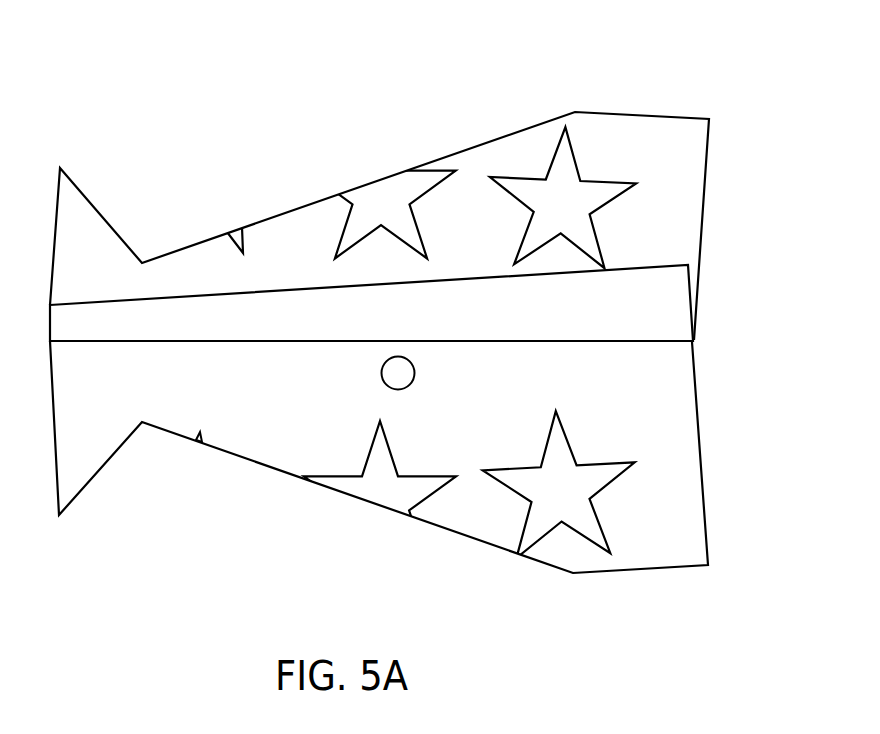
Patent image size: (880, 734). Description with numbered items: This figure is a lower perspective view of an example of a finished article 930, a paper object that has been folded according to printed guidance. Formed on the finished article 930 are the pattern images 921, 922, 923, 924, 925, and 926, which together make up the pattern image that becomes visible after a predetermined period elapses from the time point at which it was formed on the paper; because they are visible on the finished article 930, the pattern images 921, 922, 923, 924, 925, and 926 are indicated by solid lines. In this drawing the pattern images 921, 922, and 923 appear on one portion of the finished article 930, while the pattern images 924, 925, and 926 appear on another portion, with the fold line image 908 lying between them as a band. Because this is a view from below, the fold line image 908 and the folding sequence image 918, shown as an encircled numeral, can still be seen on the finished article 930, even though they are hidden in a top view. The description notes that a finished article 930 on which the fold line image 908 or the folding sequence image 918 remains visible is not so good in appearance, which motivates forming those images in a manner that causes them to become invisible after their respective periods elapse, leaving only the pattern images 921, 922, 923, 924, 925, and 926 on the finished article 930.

The finished article 930 is at (708, 96).
The fold line image 908 is at (520, 341).
The folding sequence image 918 is at (381, 373).
The pattern image 921 is at (243, 242).
The pattern image 922 is at (443, 185).
The pattern image 923 is at (578, 162).
The pattern image 924 is at (198, 437).
The pattern image 925 is at (433, 473).
The pattern image 926 is at (607, 462).